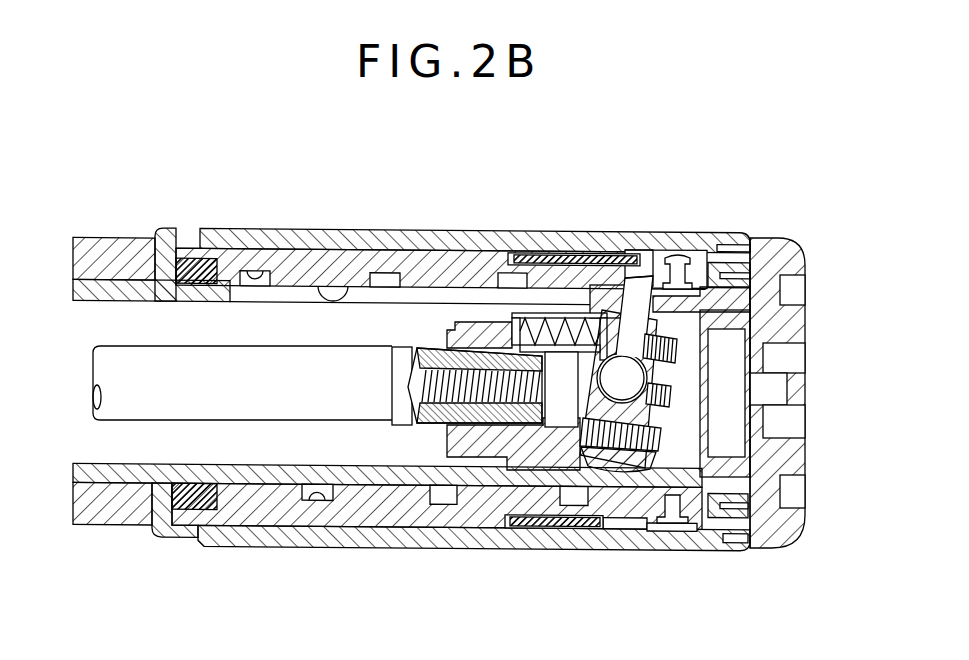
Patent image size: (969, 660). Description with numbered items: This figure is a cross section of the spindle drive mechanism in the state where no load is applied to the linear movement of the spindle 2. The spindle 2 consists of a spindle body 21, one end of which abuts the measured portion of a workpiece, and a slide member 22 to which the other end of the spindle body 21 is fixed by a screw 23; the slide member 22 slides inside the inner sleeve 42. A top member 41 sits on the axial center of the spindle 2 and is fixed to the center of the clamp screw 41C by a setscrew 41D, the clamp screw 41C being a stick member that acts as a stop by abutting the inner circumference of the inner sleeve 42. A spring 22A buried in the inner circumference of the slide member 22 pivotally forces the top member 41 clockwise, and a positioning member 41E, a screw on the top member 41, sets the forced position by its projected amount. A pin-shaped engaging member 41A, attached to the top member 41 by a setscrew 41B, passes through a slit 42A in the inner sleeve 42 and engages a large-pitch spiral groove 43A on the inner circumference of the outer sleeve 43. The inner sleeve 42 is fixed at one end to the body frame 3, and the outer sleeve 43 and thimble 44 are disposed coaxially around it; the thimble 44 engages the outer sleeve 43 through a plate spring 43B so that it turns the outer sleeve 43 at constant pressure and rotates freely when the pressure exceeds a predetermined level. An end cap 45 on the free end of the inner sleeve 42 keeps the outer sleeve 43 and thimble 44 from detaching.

The spindle 2 is at (497, 173).
The body frame 3 is at (88, 256).
The spindle body 21 is at (356, 387).
The slide member 22 is at (455, 325).
The spring 22A is at (560, 383).
The screw 23 is at (505, 330).
The top member 41 is at (662, 321).
The engaging member 41A is at (662, 290).
The setscrew 41B is at (677, 352).
The clamp screw 41C is at (640, 318).
The setscrew 41D is at (669, 398).
The positioning member 41E is at (665, 444).
The inner sleeve 42 is at (73, 303).
The slit 42A is at (323, 290).
The outer sleeve 43 is at (288, 265).
The spiral groove 43A is at (247, 268).
The plate spring 43B is at (612, 300).
The thimble 44 is at (734, 237).
The end cap 45 is at (784, 256).